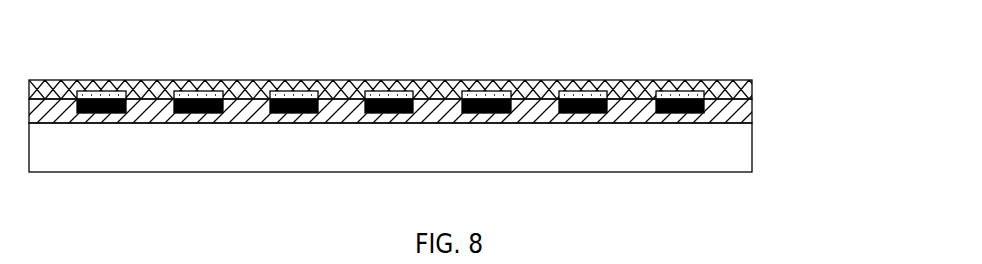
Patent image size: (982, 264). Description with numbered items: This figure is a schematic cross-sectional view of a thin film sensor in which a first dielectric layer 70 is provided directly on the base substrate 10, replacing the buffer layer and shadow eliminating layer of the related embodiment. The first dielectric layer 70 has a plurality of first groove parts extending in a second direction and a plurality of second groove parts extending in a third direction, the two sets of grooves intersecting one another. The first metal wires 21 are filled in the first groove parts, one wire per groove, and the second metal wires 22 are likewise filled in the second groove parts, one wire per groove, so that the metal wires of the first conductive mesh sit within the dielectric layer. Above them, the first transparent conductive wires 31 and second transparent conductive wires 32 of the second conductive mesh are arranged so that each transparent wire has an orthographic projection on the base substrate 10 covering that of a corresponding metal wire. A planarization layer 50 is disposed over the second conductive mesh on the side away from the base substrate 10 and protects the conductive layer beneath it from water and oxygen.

The base substrate 10 is at (732, 155).
The first dielectric layer 70 is at (743, 107).
The planarization layer 50 is at (733, 83).
The first transparent conductive wires 31 is at (107, 95).
The second transparent conductive wires 32 is at (210, 93).
The first metal wires 21 is at (105, 113).
The second metal wires 22 is at (202, 113).